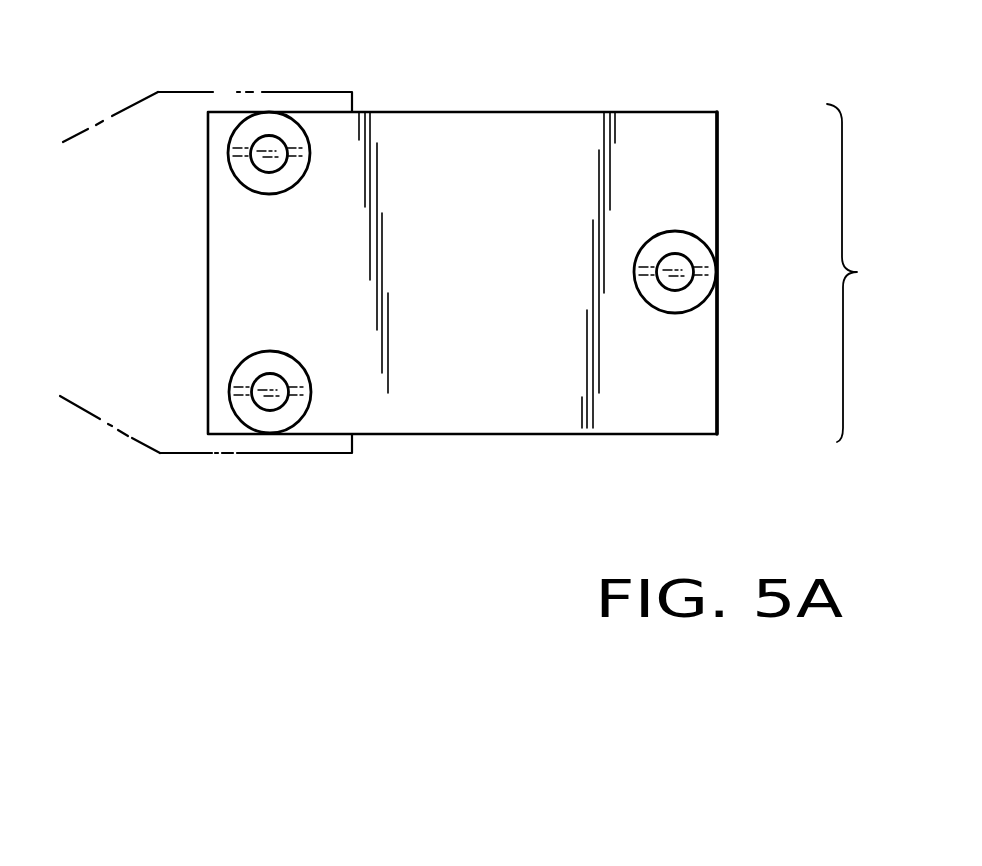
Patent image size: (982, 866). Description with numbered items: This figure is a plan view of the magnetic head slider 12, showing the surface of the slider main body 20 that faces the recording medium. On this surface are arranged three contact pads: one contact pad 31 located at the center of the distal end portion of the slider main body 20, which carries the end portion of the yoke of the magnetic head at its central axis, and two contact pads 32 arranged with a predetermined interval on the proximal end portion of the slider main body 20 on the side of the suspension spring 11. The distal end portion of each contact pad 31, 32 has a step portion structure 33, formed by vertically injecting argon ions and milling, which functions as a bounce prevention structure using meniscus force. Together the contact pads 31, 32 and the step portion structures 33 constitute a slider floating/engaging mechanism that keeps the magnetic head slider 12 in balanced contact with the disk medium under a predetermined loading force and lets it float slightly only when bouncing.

The suspension spring 11 is at (130, 438).
The magnetic head slider 12 is at (859, 273).
The slider main body 20 is at (560, 112).
The contact pad 31 is at (687, 230).
The contact pad 32 is at (309, 140).
The step portion structure 33 is at (250, 175).